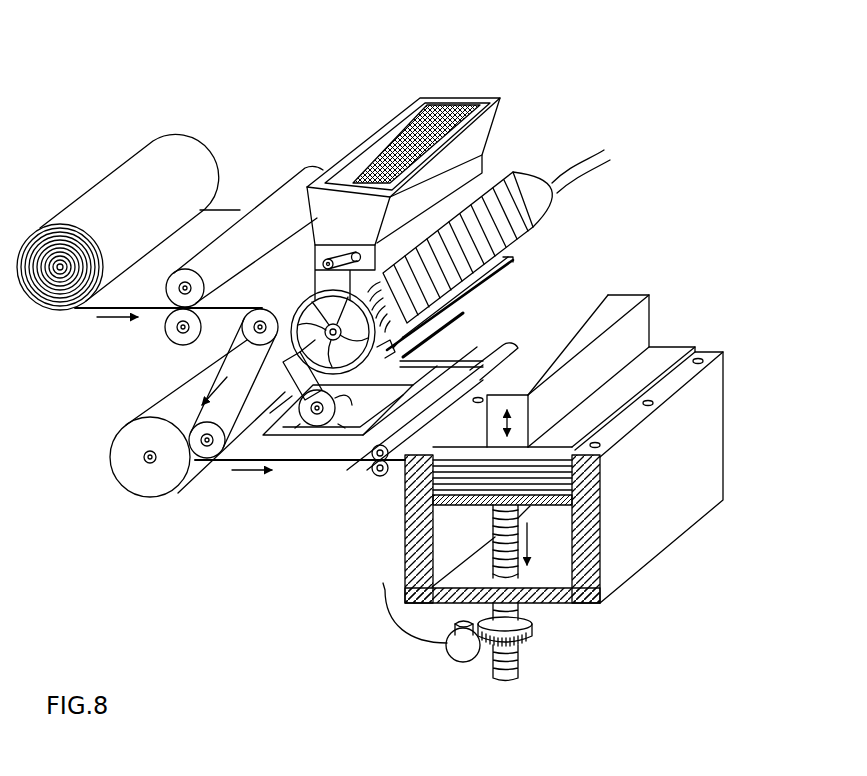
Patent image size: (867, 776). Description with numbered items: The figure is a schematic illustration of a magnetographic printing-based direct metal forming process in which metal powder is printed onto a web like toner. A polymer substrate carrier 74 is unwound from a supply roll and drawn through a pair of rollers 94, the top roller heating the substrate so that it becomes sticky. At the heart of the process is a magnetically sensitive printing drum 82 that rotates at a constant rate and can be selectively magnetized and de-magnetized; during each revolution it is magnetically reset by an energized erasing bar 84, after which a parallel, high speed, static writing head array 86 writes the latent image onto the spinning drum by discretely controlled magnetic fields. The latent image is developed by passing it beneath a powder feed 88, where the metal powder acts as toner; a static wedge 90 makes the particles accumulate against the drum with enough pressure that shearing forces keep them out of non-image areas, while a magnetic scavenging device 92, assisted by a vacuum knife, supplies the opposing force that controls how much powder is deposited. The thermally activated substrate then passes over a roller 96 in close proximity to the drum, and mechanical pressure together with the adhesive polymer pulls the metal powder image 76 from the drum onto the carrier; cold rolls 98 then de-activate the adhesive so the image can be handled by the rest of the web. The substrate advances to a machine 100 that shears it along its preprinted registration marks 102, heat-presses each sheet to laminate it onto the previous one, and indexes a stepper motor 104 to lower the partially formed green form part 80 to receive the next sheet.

The substrate carrier 74 is at (128, 177).
The pair of rollers 94 is at (278, 203).
The roller 96 is at (243, 340).
The static wedge 90 is at (223, 460).
The printing drum 82 is at (348, 348).
The magnetic scavenging device 92 is at (343, 423).
The image 76 is at (290, 436).
The powder feed 88 is at (452, 105).
The static writing head array 86 is at (543, 227).
The erasing bar 84 is at (507, 270).
The cold rolls 98 is at (507, 344).
The machine 100 is at (702, 437).
The preprinted registration marks 102 is at (380, 508).
The green form part 80 is at (559, 489).
The stepper motor 104 is at (455, 652).